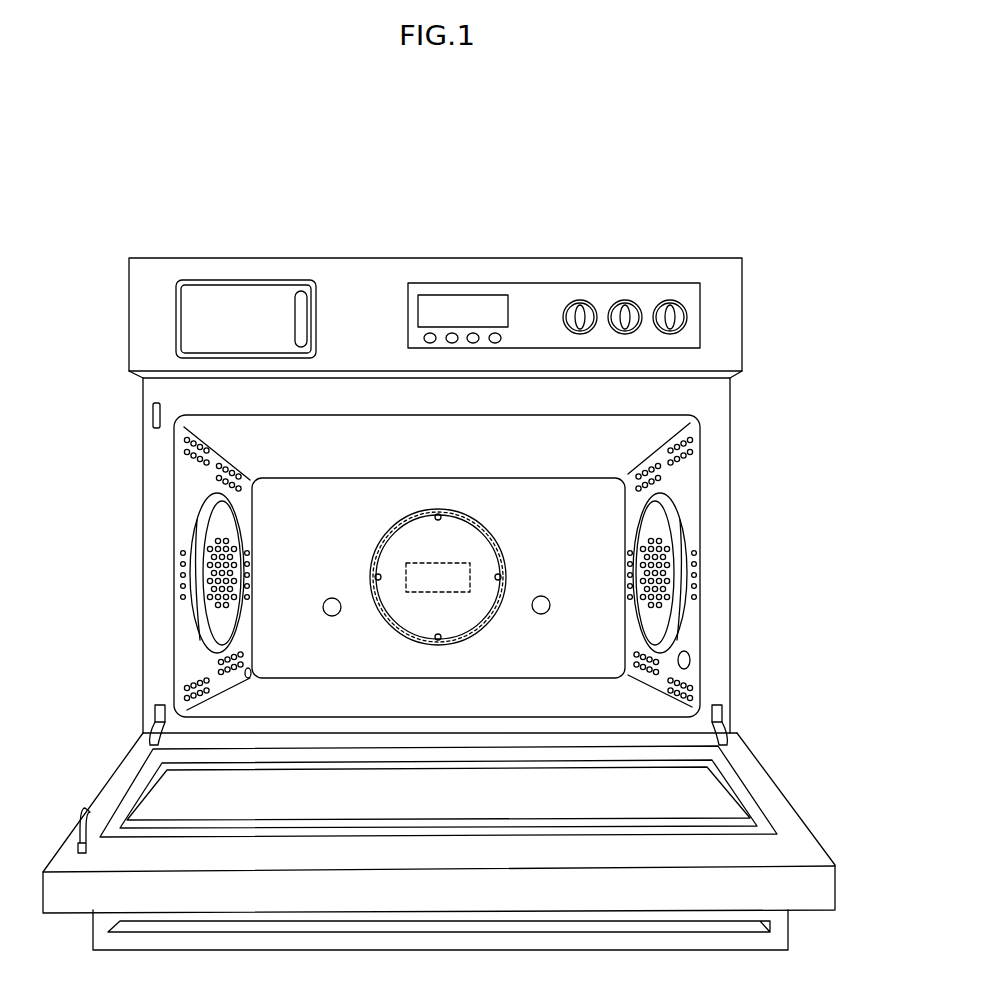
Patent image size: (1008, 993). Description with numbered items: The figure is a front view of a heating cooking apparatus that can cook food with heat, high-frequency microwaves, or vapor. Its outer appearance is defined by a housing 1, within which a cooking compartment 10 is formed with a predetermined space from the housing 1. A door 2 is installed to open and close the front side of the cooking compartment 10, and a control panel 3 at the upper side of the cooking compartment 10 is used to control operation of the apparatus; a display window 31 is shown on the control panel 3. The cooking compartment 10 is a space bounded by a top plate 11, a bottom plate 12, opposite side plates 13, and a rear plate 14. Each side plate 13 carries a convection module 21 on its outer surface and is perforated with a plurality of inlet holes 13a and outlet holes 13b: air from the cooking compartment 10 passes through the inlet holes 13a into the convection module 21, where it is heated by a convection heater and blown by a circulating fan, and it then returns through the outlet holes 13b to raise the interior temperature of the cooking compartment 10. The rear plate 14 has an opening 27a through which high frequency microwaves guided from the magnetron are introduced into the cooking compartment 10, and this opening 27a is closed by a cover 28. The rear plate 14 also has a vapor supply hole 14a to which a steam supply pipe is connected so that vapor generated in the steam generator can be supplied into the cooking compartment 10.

The housing 1 is at (636, 258).
The door 2 is at (796, 838).
The control panel 3 is at (362, 278).
The display window 31 is at (248, 293).
The cooking compartment 10 is at (547, 525).
The top plate 11 is at (356, 447).
The bottom plate 12 is at (276, 702).
The side plate 13 is at (198, 477).
The inlet holes 13a is at (232, 577).
The outlet holes 13b is at (240, 663).
The rear plate 14 is at (300, 528).
The vapor supply hole 14a is at (332, 598).
The convection module 21 is at (190, 603).
The opening 27a is at (447, 563).
The cover 28 is at (470, 617).